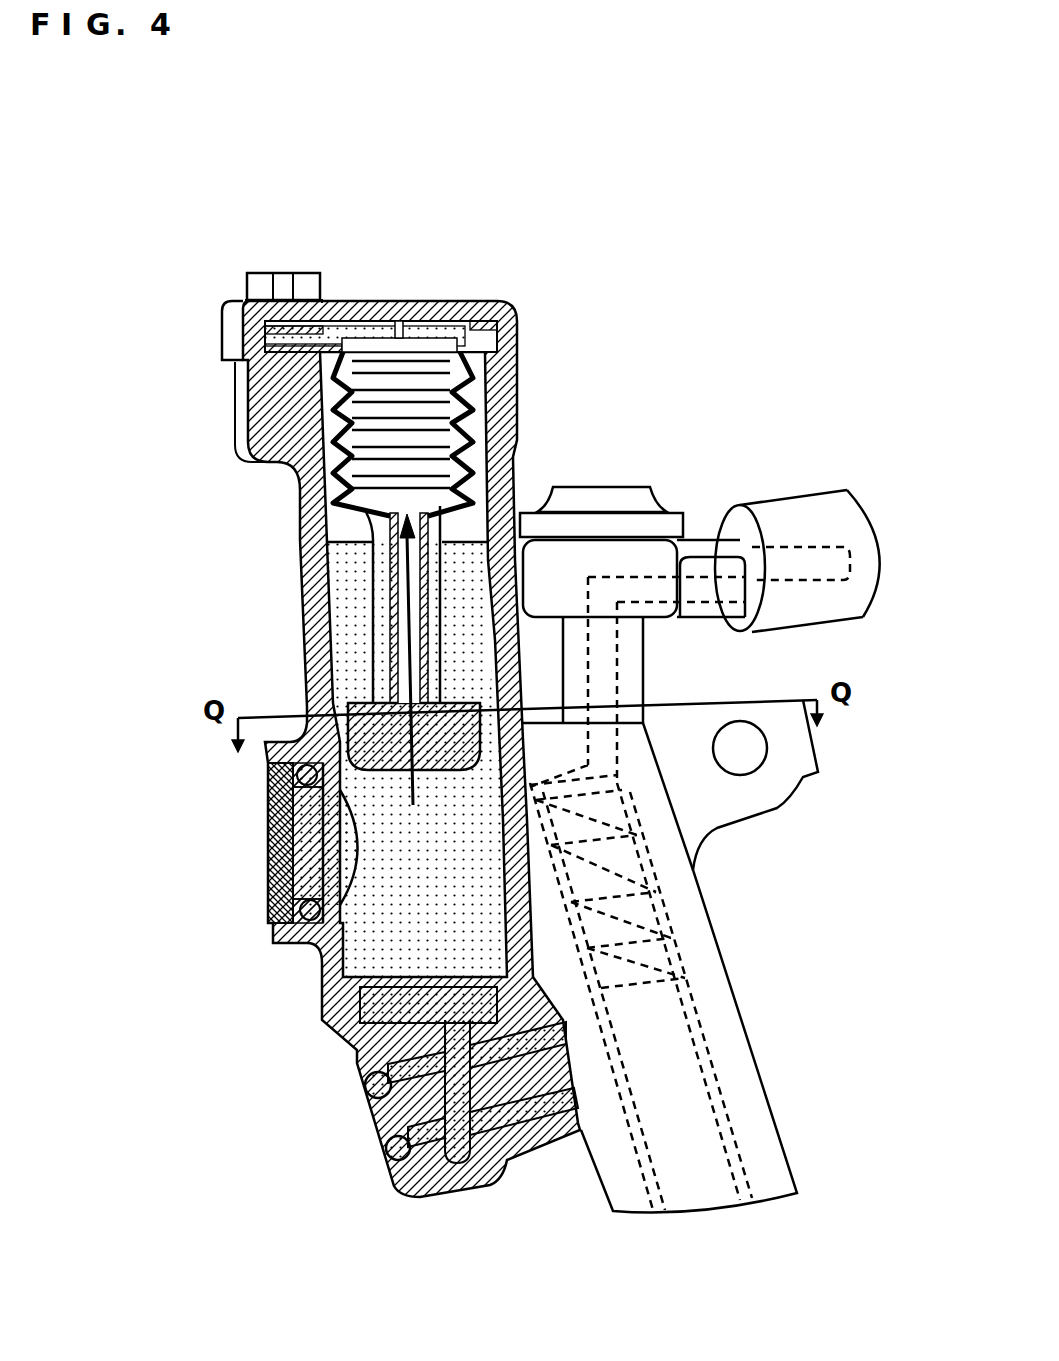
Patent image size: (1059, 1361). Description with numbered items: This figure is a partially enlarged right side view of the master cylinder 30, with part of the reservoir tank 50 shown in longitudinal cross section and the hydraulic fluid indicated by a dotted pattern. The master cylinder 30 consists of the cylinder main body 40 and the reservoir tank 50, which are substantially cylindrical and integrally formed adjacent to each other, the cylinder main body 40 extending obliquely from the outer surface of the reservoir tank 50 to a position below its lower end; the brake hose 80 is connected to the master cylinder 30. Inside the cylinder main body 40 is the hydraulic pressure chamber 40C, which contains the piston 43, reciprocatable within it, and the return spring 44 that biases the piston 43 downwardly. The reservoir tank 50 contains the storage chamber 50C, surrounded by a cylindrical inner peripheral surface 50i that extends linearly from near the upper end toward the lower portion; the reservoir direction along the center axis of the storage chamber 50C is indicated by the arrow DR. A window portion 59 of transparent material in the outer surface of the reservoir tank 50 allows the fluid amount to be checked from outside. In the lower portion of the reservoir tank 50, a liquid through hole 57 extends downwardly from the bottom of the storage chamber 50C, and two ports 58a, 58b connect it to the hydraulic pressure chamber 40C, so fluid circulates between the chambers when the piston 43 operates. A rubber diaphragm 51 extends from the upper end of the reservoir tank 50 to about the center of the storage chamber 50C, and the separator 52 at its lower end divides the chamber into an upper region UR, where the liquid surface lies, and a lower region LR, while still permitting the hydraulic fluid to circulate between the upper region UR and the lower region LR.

The master cylinder 30 is at (270, 205).
The cylinder main body 40 is at (743, 1080).
The hydraulic pressure chamber 40C is at (690, 990).
The piston 43 is at (720, 1143).
The return spring 44 is at (703, 857).
The reservoir tank 50 is at (258, 405).
The storage chamber 50C is at (330, 530).
The inner peripheral surface 50i is at (437, 492).
The diaphragm 51 is at (403, 410).
The separator 52 is at (367, 752).
The liquid through hole 57 is at (453, 1087).
The port 58a is at (537, 1120).
The port 58b is at (490, 1120).
The window portion 59 is at (282, 882).
The brake hose 80 is at (812, 505).
The reservoir direction DR is at (413, 655).
The upper region UR is at (369, 597).
The lower region LR is at (438, 892).